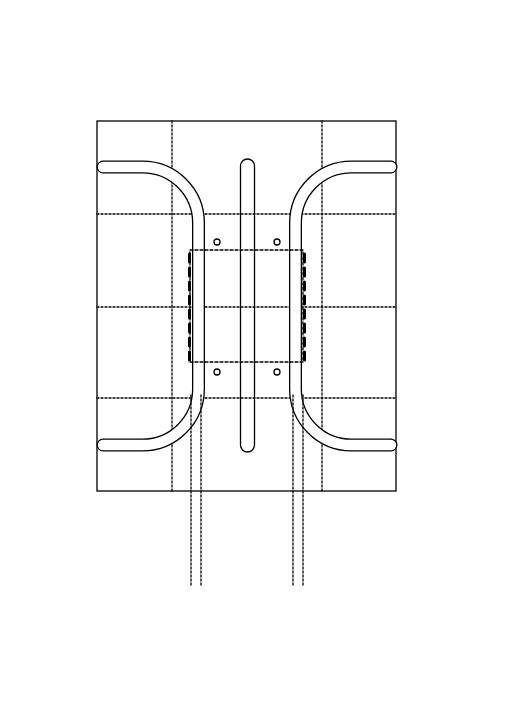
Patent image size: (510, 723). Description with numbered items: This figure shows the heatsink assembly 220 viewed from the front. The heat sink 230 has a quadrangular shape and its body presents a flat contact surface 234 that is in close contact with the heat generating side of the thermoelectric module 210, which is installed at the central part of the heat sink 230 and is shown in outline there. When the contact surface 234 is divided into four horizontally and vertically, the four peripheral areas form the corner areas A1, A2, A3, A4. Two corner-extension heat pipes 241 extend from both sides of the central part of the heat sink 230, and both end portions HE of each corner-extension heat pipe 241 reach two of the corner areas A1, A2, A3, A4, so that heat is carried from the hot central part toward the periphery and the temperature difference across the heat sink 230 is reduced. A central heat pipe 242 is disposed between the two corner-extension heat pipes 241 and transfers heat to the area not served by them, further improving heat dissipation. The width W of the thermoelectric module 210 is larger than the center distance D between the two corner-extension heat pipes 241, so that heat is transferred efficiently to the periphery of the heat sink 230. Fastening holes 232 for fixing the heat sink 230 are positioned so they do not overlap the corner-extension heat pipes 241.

The heating module 220 is at (143, 44).
The heat sink 230 is at (90, 345).
The corner-extension heat pipe 241 is at (122, 160).
The central heat pipe 242 is at (249, 158).
The fastening hole 232 is at (280, 243).
The thermoelectric module 210 is at (308, 278).
The contact surface 234 is at (385, 350).
The end portion HE is at (103, 447).
The corner area A1 is at (108, 143).
The corner area A2 is at (385, 143).
The corner area A3 is at (108, 474).
The corner area A4 is at (385, 474).
The center distance D is at (293, 549).
The width W is at (303, 580).